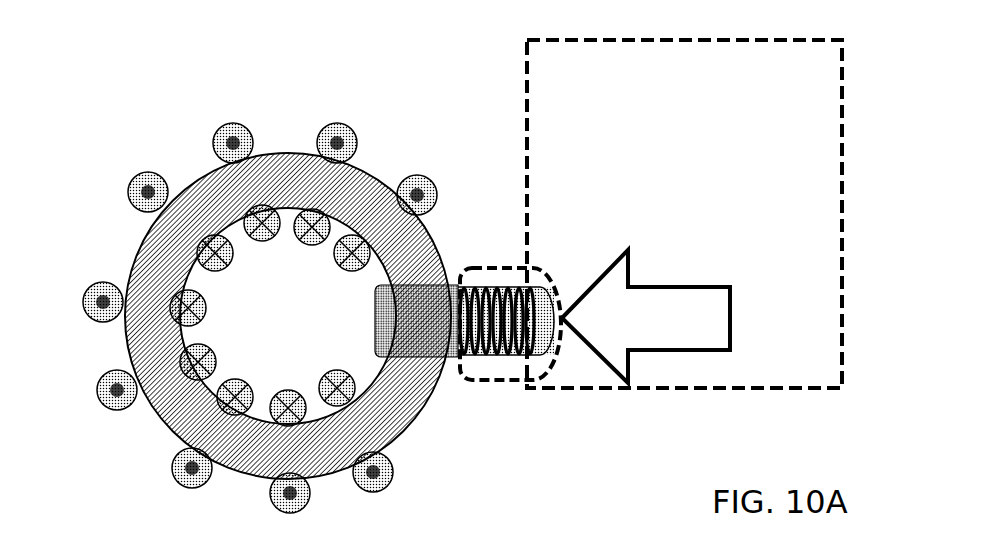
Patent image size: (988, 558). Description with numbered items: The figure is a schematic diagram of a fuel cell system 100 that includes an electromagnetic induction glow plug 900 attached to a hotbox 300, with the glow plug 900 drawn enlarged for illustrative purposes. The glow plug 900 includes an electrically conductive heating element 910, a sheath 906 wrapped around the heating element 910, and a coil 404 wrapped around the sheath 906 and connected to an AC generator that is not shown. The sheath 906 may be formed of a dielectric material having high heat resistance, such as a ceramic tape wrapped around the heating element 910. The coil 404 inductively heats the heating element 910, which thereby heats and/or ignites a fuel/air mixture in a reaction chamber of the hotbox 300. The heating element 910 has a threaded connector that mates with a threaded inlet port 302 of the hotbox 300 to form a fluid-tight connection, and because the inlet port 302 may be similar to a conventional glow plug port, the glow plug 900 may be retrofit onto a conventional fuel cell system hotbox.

The fuel cell system 100 is at (440, 277).
The electromagnetic induction glow plug 900 is at (296, 294).
The sheath 906 is at (377, 410).
The coil 404 is at (188, 364).
The heating element 910 is at (425, 338).
The hotbox 300 is at (712, 187).
The threaded inlet port 302 is at (507, 265).